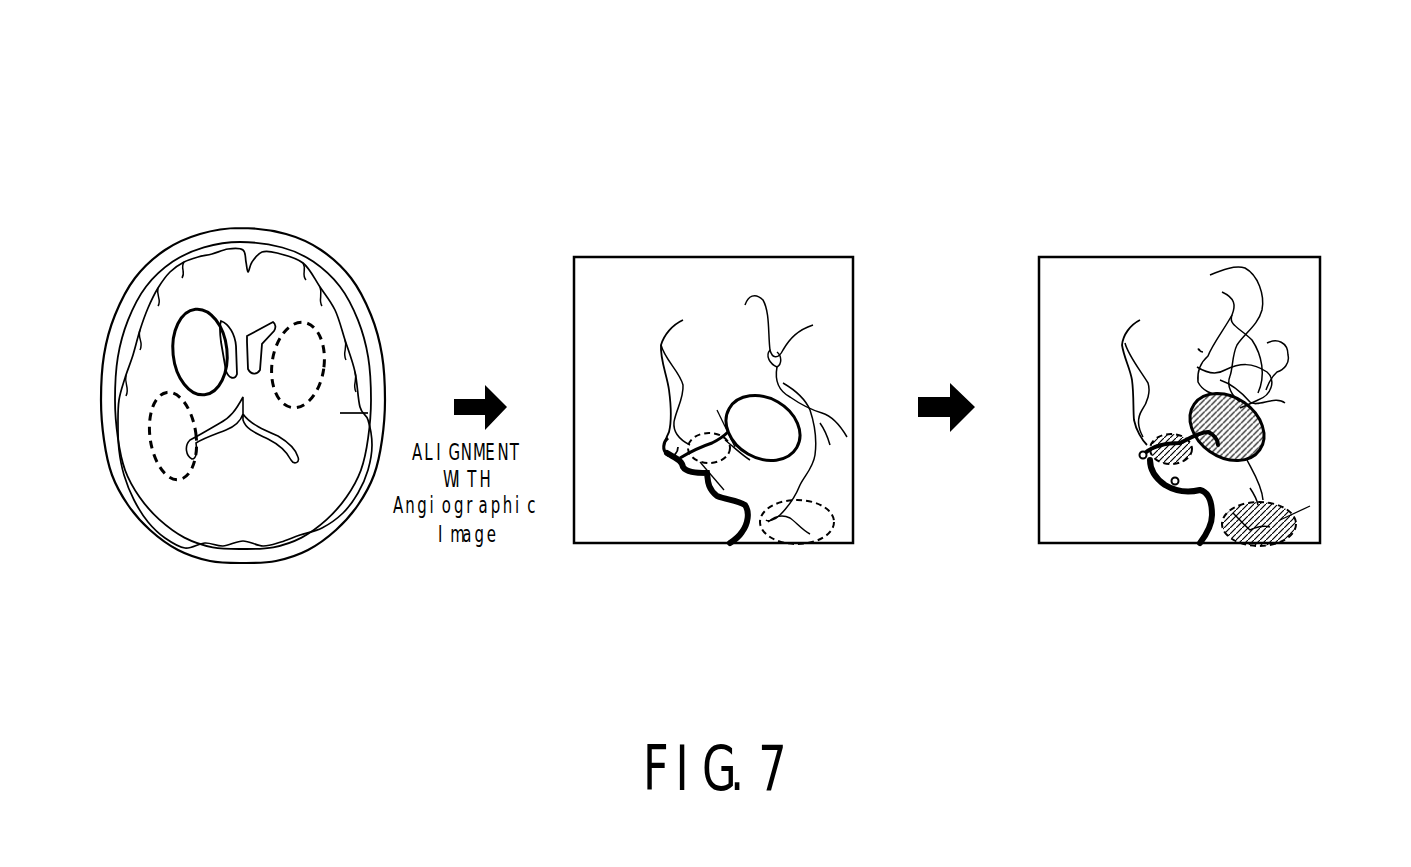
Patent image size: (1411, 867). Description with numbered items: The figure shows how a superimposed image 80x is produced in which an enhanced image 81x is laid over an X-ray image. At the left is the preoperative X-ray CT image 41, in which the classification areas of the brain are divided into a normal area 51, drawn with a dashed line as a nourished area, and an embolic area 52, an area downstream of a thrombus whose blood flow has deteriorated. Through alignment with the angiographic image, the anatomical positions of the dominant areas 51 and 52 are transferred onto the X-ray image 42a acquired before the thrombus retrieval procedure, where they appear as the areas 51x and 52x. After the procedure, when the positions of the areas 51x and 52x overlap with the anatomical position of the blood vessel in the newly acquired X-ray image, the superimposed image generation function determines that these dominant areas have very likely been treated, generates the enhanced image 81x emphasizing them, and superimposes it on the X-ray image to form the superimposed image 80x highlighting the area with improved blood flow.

The preoperative X-ray CT image 41 is at (259, 194).
The normal area 51 is at (303, 318).
The embolic area 52 is at (192, 304).
The X-ray image before thrombus retrieval procedure 42a is at (752, 224).
The area on the angiogram corresponding to dominant area 51 51x is at (705, 435).
The area on the angiogram corresponding to dominant area 52 52x is at (798, 437).
The superimposed image 80x is at (1218, 224).
The enhanced image 81x is at (1173, 432).